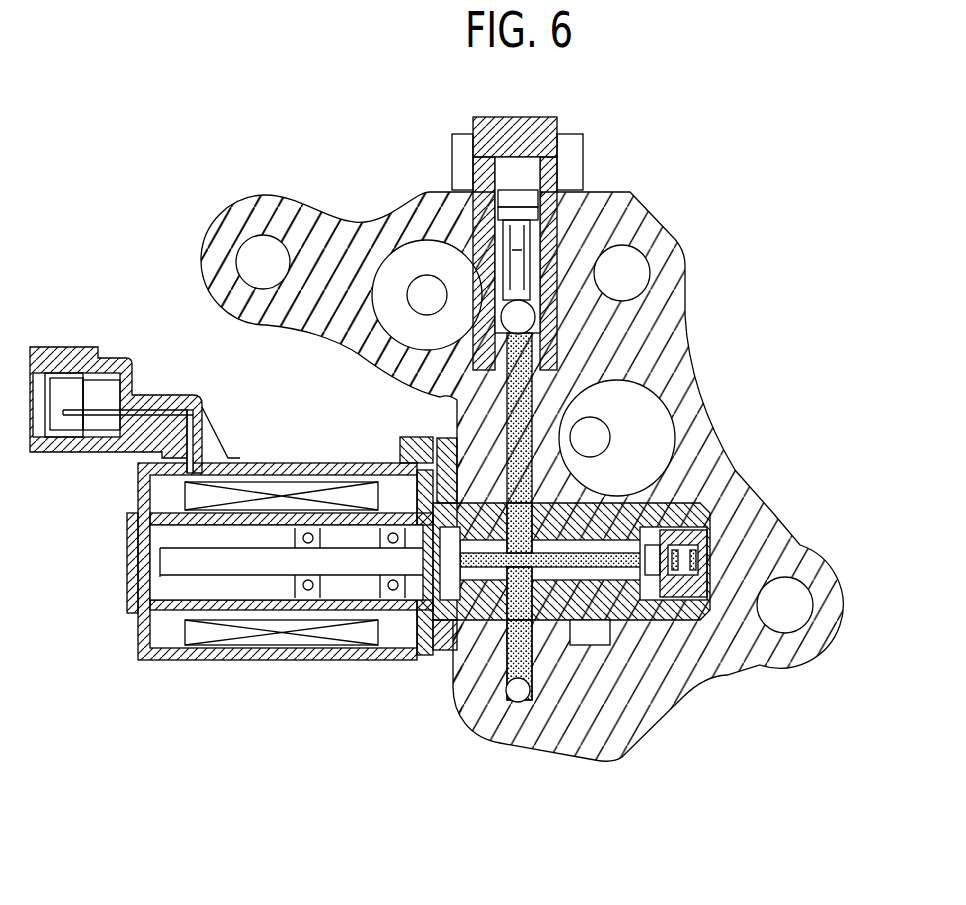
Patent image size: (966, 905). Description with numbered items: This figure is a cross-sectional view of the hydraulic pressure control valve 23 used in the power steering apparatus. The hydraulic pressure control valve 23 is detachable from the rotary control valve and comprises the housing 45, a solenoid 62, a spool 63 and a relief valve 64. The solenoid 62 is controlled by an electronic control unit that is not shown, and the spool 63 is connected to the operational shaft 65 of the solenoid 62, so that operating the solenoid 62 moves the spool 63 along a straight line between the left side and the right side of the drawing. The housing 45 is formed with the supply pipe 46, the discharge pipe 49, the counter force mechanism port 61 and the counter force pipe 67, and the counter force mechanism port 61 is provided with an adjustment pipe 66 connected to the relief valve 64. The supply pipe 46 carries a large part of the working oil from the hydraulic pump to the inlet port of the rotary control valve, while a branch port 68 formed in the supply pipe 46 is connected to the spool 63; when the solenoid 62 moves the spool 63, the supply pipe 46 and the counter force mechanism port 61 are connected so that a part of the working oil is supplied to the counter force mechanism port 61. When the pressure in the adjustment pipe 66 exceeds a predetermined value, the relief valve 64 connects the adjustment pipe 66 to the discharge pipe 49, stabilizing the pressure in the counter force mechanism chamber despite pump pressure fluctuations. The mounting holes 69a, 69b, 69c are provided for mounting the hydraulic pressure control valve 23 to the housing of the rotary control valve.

The hydraulic pressure control valve 23 is at (648, 126).
The housing 45 is at (660, 343).
The supply pipe 46 is at (608, 432).
The discharge pipe 49 is at (430, 287).
The counter force mechanism port 61 is at (437, 447).
The solenoid 62 is at (262, 668).
The spool 63 is at (632, 620).
The relief valve 64 is at (558, 165).
The operational shaft 65 is at (208, 567).
The adjustment pipe 66 is at (497, 430).
The counter force pipe 67 is at (503, 695).
The branch port 68 is at (640, 497).
The mounting hole 69a is at (640, 258).
The mounting hole 69b is at (808, 604).
The mounting hole 69c is at (264, 240).